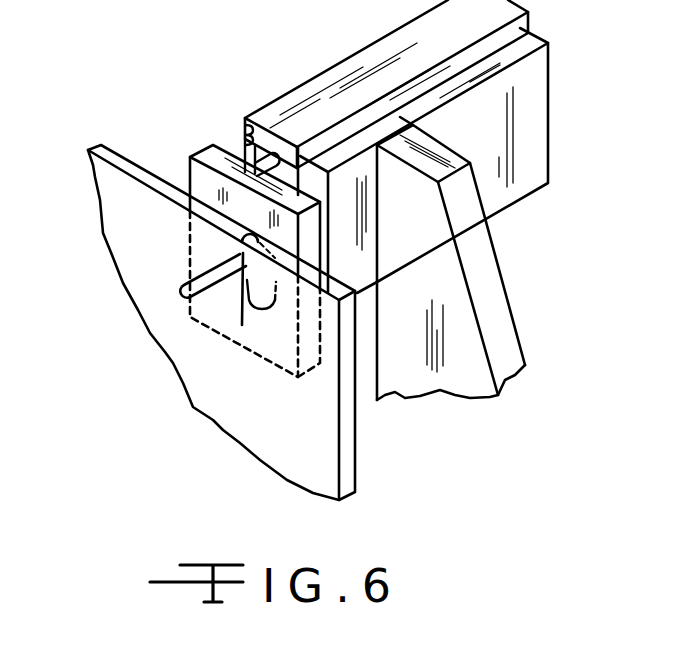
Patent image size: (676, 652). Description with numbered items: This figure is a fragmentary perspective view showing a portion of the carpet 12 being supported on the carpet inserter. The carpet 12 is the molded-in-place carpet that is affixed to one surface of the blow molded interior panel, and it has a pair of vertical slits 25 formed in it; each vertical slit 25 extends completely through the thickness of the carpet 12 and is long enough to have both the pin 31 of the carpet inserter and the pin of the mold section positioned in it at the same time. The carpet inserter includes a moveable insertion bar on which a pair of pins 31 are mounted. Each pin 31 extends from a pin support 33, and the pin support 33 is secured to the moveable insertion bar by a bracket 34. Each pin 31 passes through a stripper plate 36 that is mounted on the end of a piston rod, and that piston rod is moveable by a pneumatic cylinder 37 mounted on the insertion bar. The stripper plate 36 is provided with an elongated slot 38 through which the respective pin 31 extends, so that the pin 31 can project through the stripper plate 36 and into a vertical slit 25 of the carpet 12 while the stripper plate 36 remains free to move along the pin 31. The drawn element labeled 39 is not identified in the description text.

The carpet 12 is at (347, 451).
The vertical slits 25 is at (235, 310).
The pin 31 is at (187, 289).
The pin support 33 is at (493, 133).
The bracket 34 is at (488, 285).
The stripper plate 36 is at (210, 157).
The pneumatic cylinder 37 is at (363, 63).
The elongated slot 38 is at (276, 305).
The retaining clip 39 is at (272, 142).